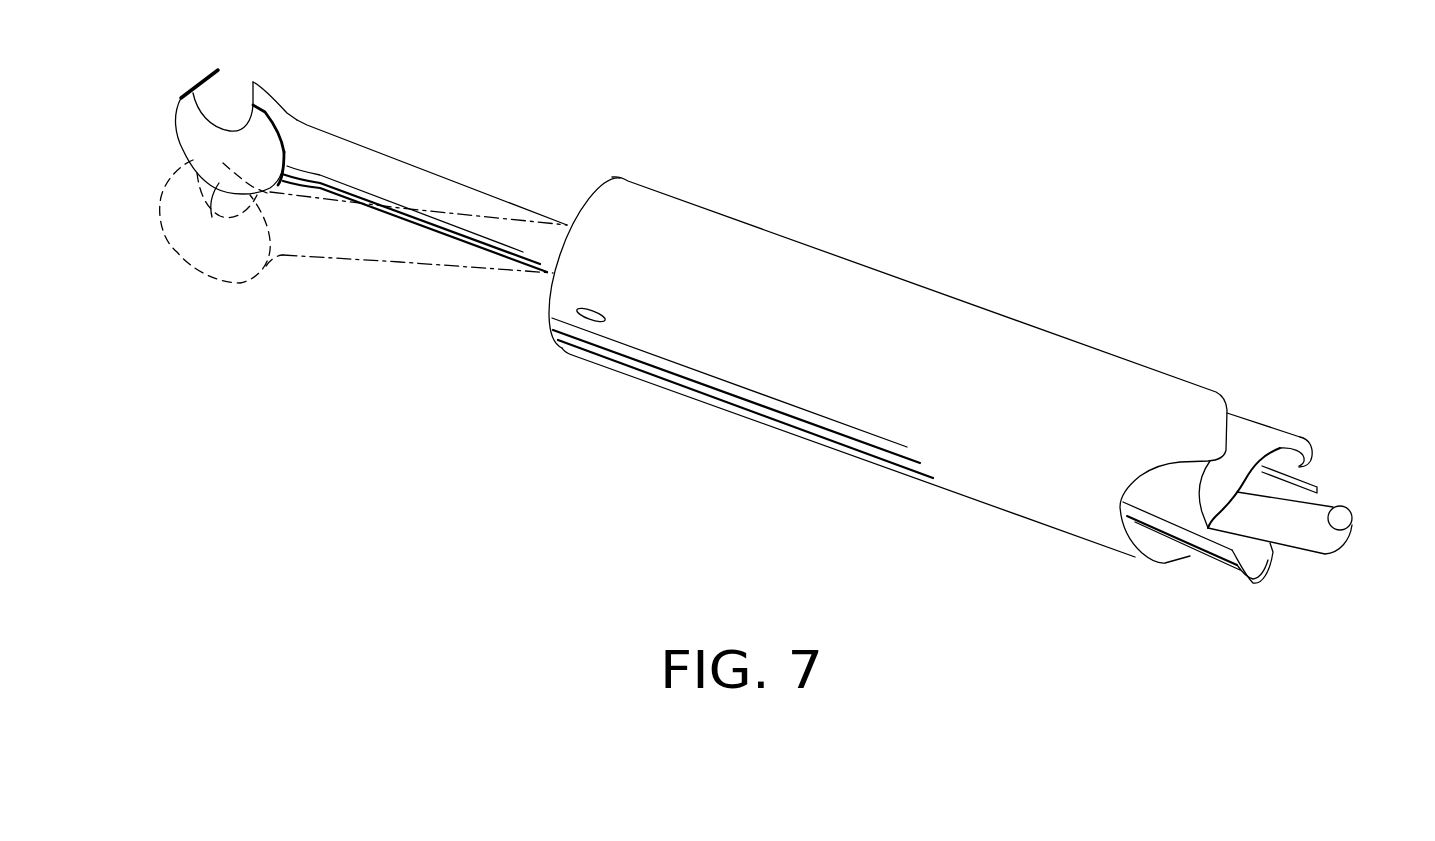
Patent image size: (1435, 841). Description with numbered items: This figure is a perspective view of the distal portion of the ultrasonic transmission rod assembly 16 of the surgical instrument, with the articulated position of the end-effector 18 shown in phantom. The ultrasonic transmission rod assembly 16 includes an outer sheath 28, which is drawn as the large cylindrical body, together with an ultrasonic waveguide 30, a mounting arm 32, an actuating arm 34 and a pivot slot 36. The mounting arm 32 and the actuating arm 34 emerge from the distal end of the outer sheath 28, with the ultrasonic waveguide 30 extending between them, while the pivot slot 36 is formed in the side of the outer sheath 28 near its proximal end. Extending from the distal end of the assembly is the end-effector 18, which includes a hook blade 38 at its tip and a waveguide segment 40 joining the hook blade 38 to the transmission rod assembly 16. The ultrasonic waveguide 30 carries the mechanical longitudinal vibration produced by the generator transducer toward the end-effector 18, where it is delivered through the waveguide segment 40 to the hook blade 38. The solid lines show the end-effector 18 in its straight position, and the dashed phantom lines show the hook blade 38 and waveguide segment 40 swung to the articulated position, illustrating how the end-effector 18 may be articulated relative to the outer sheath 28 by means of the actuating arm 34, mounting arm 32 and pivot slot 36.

The ultrasonic transmission rod assembly 16 is at (852, 218).
The end-effector 18 is at (490, 68).
The outer sheath 28 is at (933, 310).
The ultrasonic waveguide 30 is at (1322, 508).
The mounting arm 32 is at (1250, 432).
The actuating arm 34 is at (1207, 560).
The pivot slot 36 is at (590, 320).
The hook blade 38 is at (197, 132).
The waveguide segment 40 is at (468, 195).